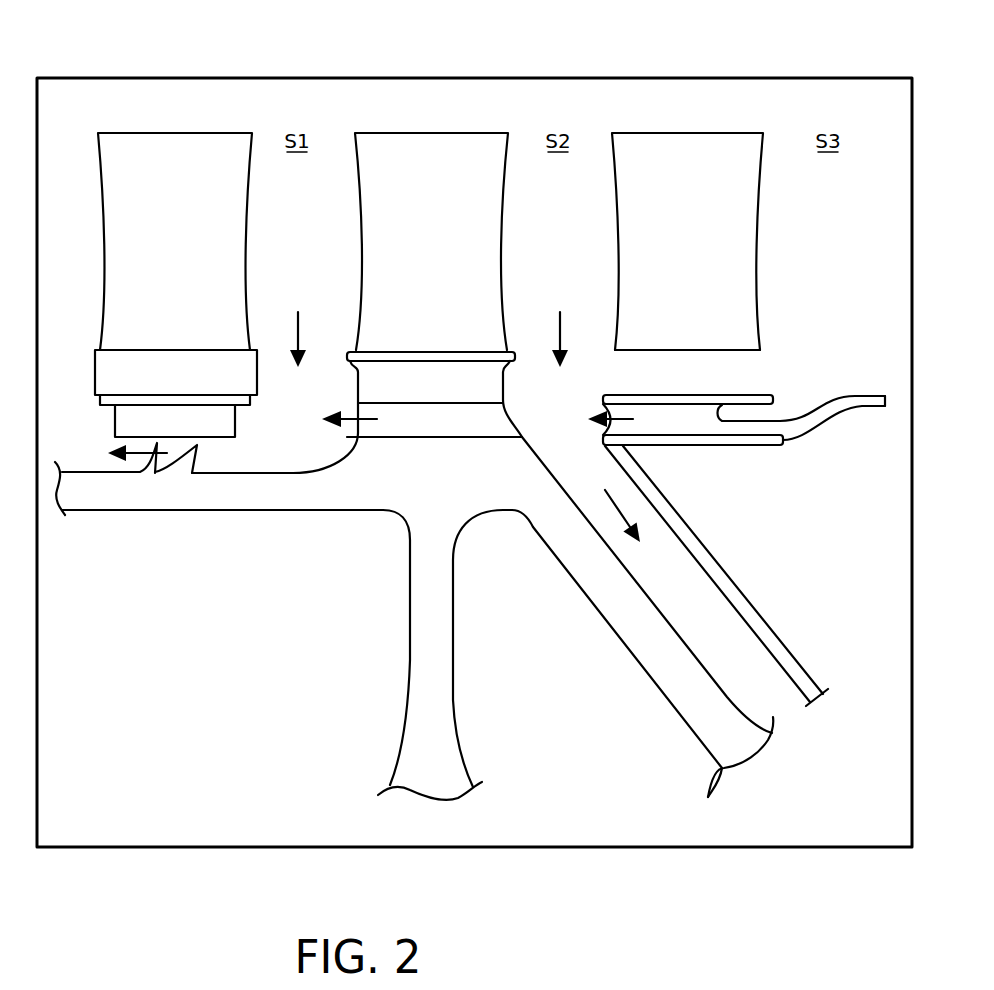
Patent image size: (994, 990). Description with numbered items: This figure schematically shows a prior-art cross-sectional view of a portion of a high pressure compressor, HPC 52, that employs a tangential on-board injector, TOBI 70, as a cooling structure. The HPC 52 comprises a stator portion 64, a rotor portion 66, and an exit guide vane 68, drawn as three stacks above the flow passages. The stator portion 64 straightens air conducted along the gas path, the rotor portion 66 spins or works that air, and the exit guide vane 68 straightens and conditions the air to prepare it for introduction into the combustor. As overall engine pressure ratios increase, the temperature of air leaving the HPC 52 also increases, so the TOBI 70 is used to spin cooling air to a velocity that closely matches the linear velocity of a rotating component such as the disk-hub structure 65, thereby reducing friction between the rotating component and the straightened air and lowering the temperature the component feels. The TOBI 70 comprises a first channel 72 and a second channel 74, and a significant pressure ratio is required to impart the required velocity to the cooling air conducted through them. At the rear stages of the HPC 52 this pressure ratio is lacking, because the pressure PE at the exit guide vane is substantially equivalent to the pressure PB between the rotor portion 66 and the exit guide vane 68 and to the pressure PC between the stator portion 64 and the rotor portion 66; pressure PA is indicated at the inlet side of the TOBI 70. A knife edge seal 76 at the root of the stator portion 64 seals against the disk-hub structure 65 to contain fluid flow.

The HPC 52 is at (800, 110).
The stator portion 64 is at (175, 143).
The disk-hub structure 65 is at (415, 607).
The rotor portion 66 is at (432, 143).
The exit guide vane 68 is at (688, 143).
The TOBI 70 is at (660, 420).
The first channel 72 is at (757, 421).
The second channel 74 is at (483, 375).
The knife edge seal 76 is at (200, 460).
The pressure PC is at (308, 283).
The pressure PB is at (550, 285).
The pressure PE is at (809, 282).
The pressure PA is at (742, 428).